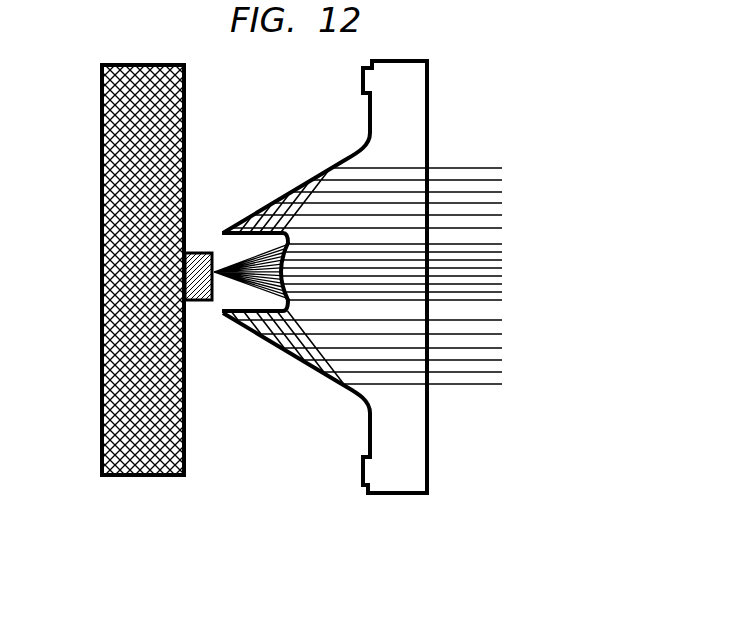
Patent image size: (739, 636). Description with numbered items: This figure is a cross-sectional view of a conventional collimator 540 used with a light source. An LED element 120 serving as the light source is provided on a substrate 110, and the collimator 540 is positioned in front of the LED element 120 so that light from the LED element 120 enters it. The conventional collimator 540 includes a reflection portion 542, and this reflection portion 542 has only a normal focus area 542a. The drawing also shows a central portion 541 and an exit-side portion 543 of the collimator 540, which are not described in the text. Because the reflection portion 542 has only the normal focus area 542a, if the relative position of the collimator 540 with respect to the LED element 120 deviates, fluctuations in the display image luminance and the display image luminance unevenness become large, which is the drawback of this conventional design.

The substrate 110 is at (120, 476).
The LED element 120 is at (198, 301).
The conventional collimator 540 is at (355, 331).
The central refractive lens portion 541 is at (217, 311).
The reflection portion 542 is at (297, 378).
The normal focus area 542a is at (290, 191).
The exit plate portion 543 is at (428, 477).